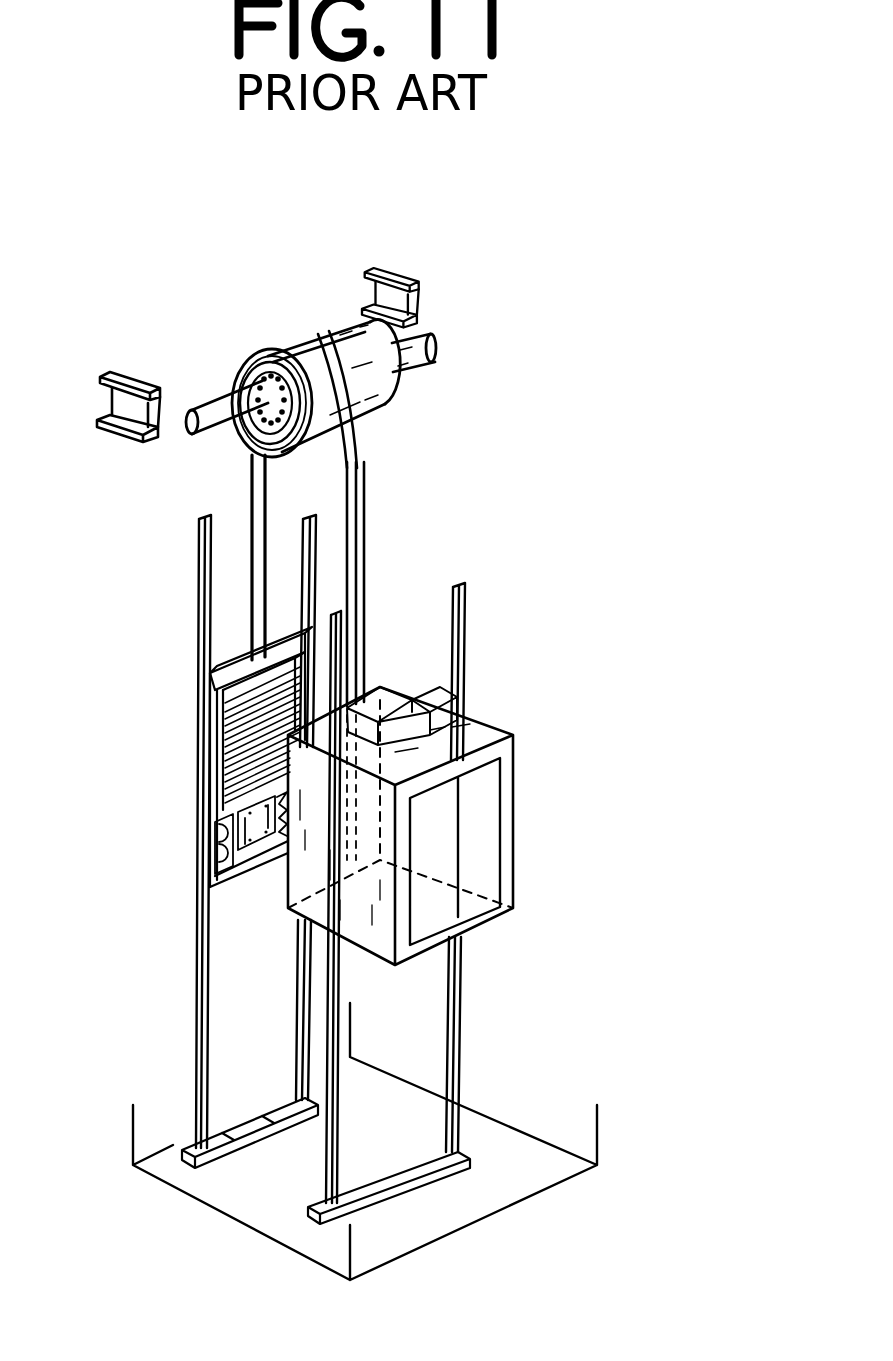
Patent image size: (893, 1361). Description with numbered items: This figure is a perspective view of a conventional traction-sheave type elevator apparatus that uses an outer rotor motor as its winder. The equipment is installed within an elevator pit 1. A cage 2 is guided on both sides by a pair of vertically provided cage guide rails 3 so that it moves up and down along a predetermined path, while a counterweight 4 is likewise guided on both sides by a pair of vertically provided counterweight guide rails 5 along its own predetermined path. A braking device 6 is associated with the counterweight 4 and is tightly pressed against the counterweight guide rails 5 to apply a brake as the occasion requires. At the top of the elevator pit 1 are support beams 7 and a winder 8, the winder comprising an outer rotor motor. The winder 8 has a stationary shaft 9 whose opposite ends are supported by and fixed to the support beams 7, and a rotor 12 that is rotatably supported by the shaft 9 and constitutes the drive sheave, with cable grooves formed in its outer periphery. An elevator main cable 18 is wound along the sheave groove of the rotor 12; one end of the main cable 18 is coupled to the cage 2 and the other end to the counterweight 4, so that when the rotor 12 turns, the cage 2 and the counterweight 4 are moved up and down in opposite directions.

The elevator pit 1 is at (515, 1100).
The cage 2 is at (517, 800).
The cage guide rail 3 is at (467, 637).
The counterweight 4 is at (220, 770).
The counterweight guide rail 5 is at (192, 1028).
The braking device 6 is at (203, 842).
The support beam 7 is at (122, 373).
The winder 8 is at (260, 360).
The stationary shaft 9 is at (437, 353).
The rotor 12 is at (362, 322).
The elevator main cable 18 is at (363, 528).